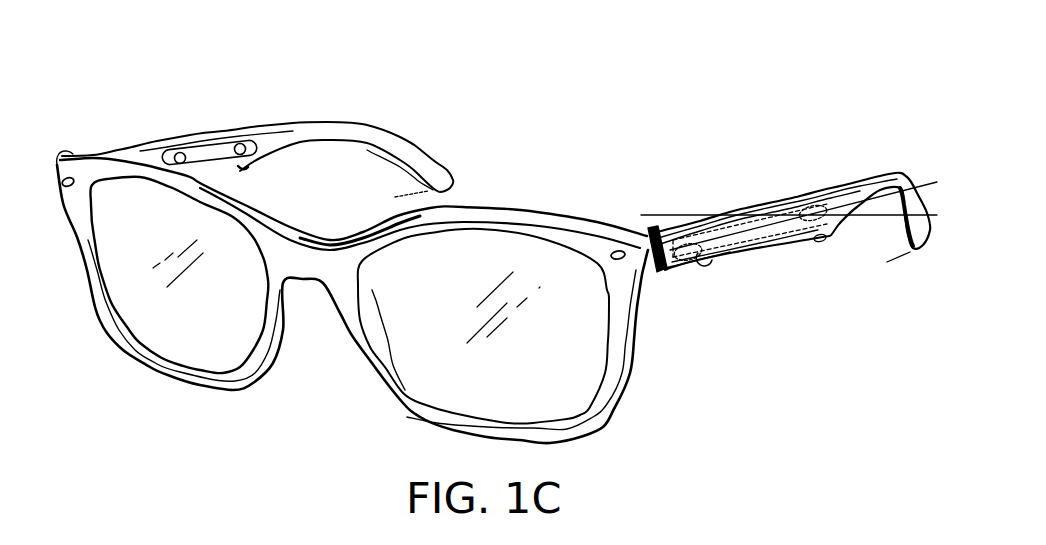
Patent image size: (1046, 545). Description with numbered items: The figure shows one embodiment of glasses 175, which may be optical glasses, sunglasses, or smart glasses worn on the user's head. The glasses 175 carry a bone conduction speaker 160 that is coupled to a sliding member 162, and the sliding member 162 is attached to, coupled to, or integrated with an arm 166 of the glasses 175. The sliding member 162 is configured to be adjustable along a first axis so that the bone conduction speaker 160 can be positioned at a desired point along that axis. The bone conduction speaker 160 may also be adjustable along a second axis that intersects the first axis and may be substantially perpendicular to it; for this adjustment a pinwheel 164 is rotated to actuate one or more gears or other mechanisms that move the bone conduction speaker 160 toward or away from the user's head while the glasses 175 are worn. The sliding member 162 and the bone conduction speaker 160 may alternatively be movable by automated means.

The glasses 175 is at (190, 84).
The arm 166 is at (441, 156).
The bone conduction speaker 160 is at (705, 250).
The sliding member 162 is at (790, 232).
The pinwheel 164 is at (824, 238).